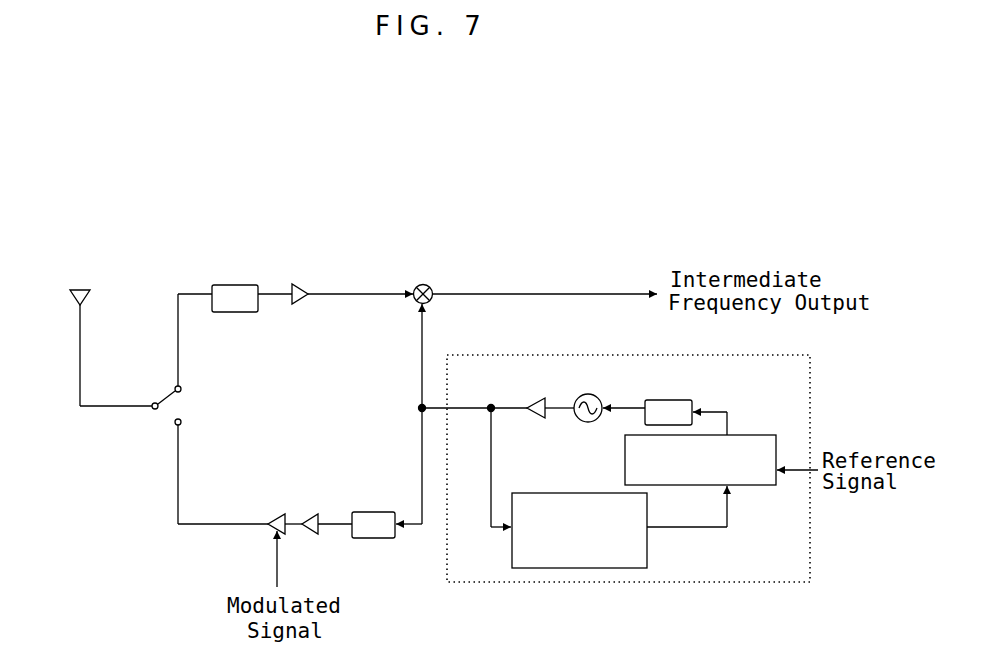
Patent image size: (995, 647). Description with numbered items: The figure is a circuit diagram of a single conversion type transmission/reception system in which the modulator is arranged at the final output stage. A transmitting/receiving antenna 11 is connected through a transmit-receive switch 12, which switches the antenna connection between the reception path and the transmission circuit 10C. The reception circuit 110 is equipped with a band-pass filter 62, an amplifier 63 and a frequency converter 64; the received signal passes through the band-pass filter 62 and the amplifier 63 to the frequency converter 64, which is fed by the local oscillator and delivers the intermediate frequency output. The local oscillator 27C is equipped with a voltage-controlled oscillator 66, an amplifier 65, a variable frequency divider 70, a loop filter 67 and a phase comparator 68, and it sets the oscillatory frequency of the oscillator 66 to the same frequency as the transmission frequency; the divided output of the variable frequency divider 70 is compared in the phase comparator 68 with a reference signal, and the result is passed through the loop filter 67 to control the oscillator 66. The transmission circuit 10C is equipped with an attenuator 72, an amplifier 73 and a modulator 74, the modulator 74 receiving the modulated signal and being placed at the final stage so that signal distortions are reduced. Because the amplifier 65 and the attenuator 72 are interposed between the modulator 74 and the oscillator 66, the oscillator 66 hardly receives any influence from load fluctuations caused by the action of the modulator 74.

The transmitting/receiving antenna 11 is at (75, 302).
The transmit-receive switch 12 is at (183, 410).
The receiving section 110 is at (260, 253).
The band-pass filter 62 is at (240, 285).
The amplifier 63 is at (293, 283).
The frequency converter 64 is at (420, 283).
The amplifier 65 is at (535, 397).
The voltage-controlled oscillator 66 is at (582, 396).
The loop filter 67 is at (660, 398).
The phase comparator 68 is at (758, 488).
The variable frequency divider 70 is at (647, 543).
The local oscillator 27C is at (652, 481).
The attenuator 72 is at (378, 539).
The amplifier 73 is at (312, 536).
The modulator 74 is at (282, 536).
The transmission circuit 10C is at (193, 567).